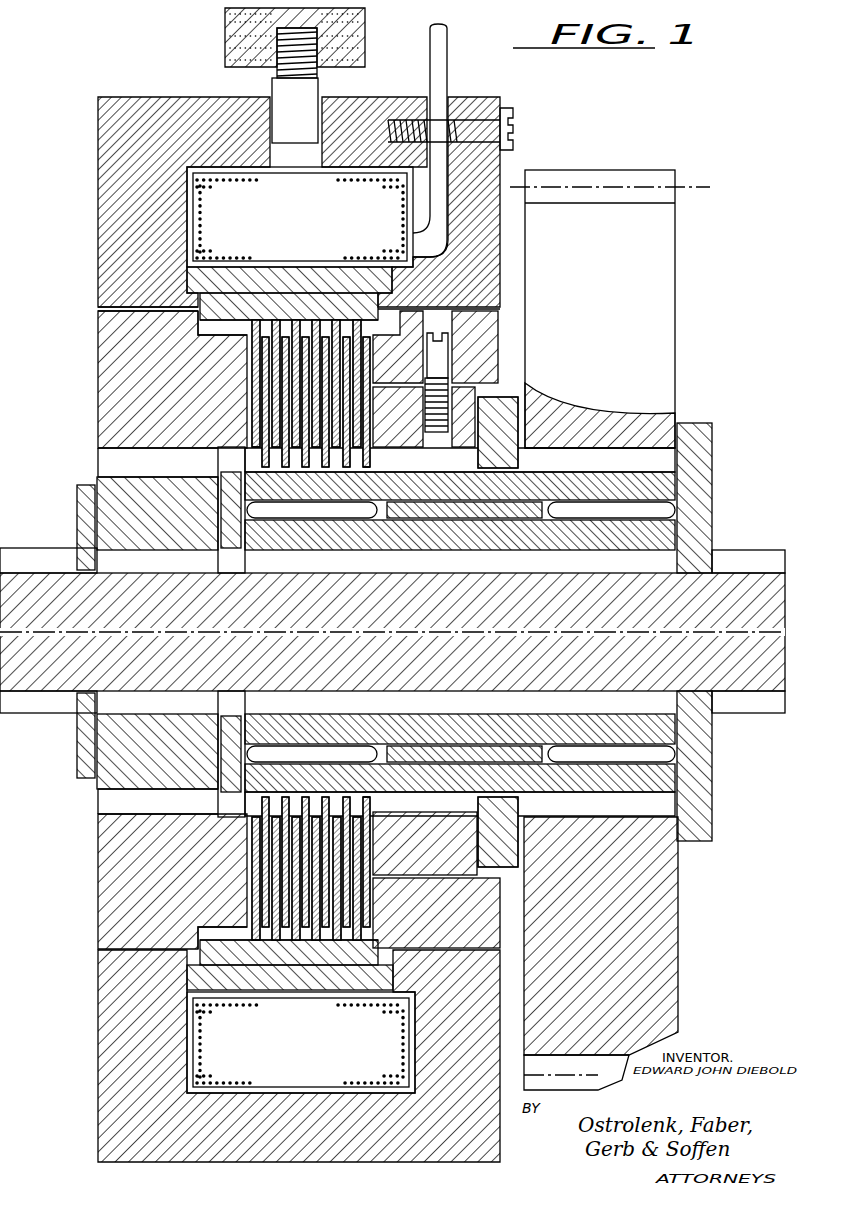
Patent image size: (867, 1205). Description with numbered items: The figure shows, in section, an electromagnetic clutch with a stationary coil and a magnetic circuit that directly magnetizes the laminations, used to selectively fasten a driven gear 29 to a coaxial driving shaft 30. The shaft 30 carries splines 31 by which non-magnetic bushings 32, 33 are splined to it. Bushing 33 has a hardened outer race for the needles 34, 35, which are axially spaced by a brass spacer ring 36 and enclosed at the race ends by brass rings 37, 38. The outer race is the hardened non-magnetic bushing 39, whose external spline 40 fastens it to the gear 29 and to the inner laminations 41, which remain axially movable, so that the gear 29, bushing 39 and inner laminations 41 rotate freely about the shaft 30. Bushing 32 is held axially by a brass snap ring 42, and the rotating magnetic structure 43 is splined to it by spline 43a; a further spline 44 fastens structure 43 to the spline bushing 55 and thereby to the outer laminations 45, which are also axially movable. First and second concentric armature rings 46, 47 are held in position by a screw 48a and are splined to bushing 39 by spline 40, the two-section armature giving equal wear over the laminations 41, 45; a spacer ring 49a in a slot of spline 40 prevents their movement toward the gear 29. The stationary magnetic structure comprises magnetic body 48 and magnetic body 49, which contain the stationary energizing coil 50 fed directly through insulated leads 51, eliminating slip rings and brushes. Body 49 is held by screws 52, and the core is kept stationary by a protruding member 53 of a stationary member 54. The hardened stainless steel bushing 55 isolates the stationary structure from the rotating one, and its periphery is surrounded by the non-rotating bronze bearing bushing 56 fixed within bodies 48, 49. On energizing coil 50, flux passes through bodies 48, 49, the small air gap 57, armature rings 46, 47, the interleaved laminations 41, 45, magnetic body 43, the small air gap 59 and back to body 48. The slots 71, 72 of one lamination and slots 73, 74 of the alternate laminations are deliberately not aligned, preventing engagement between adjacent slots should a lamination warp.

The gear 29 is at (676, 178).
The shaft 30 is at (760, 697).
The splines 31 is at (507, 635).
The non-magnetic bushing 32 is at (100, 483).
The non-magnetic bushing 33 is at (418, 550).
The needles 34 is at (608, 510).
The needles 35 is at (330, 514).
The brass spacer ring 36 is at (505, 518).
The brass ring 37 is at (714, 508).
The brass ring 38 is at (222, 563).
The hardened non-magnetic bushing 39 is at (665, 487).
The spline 40 is at (445, 468).
The inner laminations 41 is at (372, 460).
The brass snap ring 42 is at (77, 560).
The rotating magnetic structure 43 is at (100, 395).
The spline 43a is at (98, 463).
The spline 44 is at (224, 338).
The outer laminations 45 is at (252, 328).
The first armature ring 46 is at (500, 385).
The second armature ring 47 is at (497, 348).
The magnetic body 48 is at (98, 187).
The screw 48a is at (435, 347).
The magnetic body 49 is at (500, 167).
The spacer ring 49a is at (519, 408).
The stationary energizing coil 50 is at (315, 221).
The insulated leads 51 is at (447, 78).
The screws 52 is at (505, 110).
The protruding member 53 is at (308, 129).
The stationary member 54 is at (366, 36).
The spline bushing 55 is at (303, 316).
The bronze bearing bushing 56 is at (303, 289).
The air gap 57 is at (247, 184).
The air gap 59 is at (98, 311).
The slot 71 is at (358, 423).
The slot 72 is at (347, 630).
The slot 73 is at (340, 632).
The slot 74 is at (370, 357).